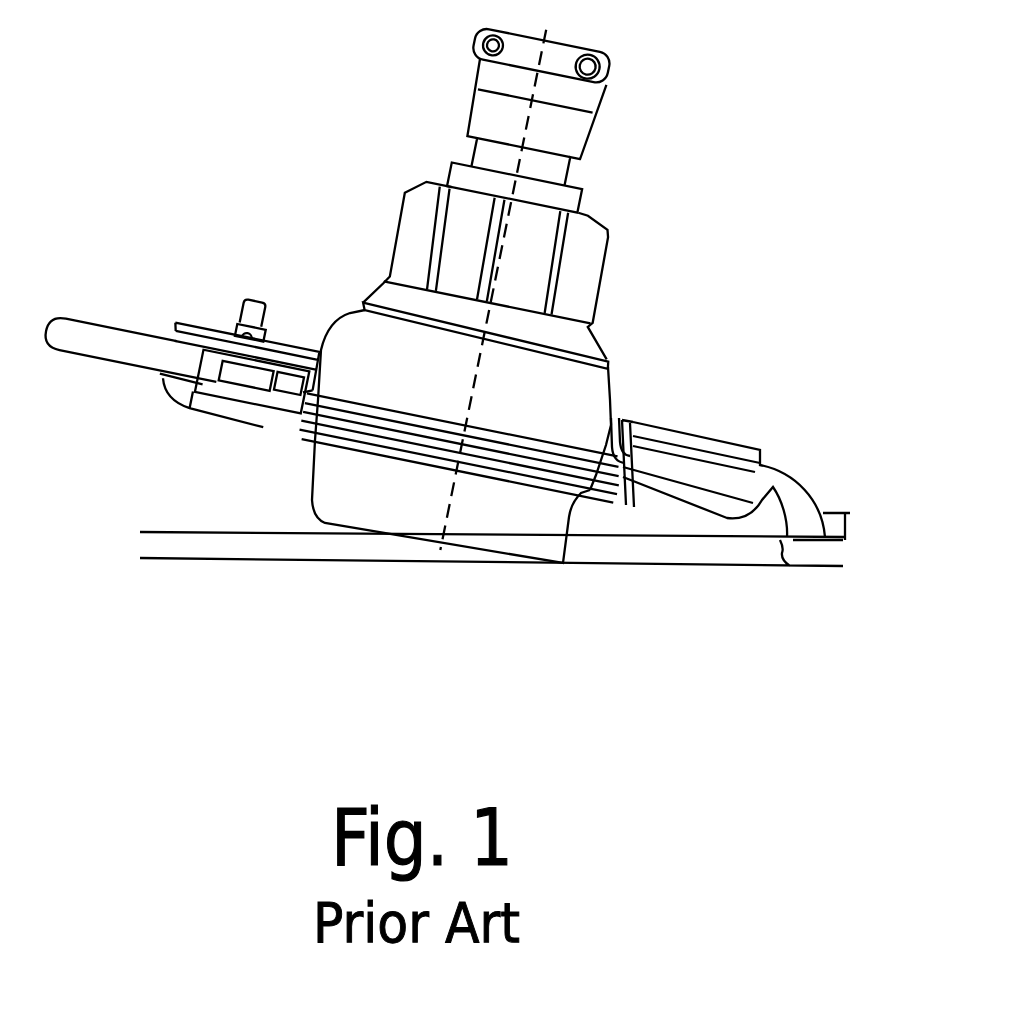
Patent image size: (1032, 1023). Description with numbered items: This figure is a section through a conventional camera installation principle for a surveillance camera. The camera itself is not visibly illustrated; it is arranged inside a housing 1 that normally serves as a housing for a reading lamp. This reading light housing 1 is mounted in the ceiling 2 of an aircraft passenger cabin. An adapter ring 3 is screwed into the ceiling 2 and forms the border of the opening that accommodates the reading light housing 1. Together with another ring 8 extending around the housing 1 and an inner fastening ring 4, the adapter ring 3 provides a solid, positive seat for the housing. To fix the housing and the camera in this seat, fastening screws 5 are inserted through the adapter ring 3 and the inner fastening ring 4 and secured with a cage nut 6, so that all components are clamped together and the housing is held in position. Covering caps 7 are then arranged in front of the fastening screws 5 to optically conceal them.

The housing 1 is at (362, 493).
The ceiling 2 is at (795, 493).
The adapter ring 3 is at (663, 500).
The inner fastening ring 4 is at (320, 350).
The fastening screws 5 is at (233, 400).
The cage nut 6 is at (230, 322).
The covering caps 7 is at (203, 410).
The ring 8 is at (630, 427).